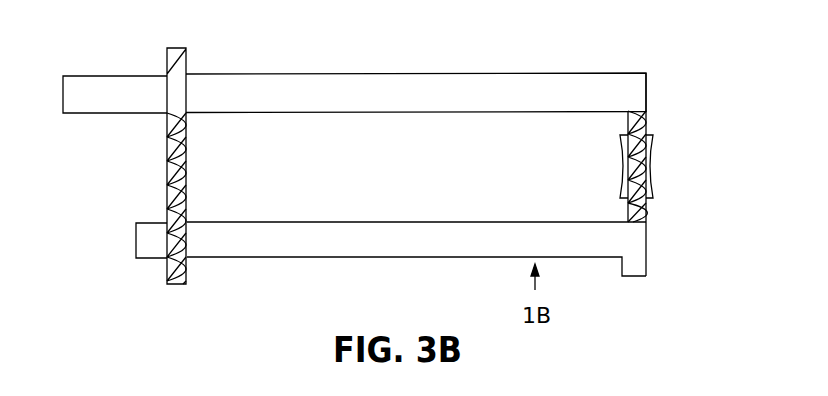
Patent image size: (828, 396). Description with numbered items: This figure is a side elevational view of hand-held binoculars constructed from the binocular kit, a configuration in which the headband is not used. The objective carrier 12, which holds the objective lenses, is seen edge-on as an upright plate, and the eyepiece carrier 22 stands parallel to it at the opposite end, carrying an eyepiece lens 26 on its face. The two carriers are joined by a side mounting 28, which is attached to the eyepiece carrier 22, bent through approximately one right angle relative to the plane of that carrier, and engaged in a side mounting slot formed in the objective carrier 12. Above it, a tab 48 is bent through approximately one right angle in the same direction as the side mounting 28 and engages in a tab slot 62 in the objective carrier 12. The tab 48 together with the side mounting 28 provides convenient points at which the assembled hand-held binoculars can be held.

The objective carrier 12 is at (167, 180).
The eyepiece carrier 22 is at (647, 207).
The eyepiece lens 26 is at (652, 165).
The side mounting 28 is at (305, 222).
The tab 48 is at (305, 73).
The tab slot 62 is at (166, 75).